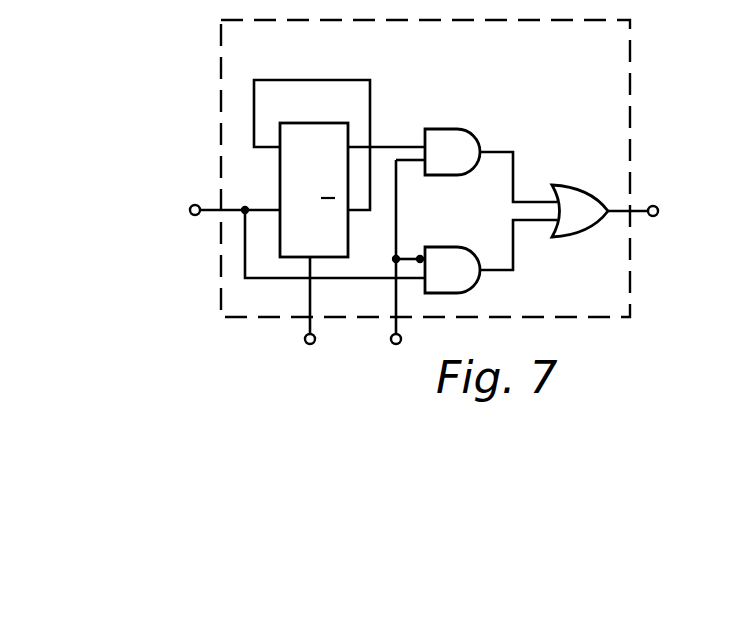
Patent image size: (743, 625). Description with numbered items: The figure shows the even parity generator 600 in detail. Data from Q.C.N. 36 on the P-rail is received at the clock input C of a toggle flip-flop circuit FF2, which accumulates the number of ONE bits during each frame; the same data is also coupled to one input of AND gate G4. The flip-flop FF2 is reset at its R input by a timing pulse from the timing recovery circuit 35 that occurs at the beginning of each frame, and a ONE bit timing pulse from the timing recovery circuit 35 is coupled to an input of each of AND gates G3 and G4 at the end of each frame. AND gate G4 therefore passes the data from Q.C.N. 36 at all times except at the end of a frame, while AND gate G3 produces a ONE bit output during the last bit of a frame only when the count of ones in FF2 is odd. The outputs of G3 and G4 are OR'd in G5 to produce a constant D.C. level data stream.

The even parity generator 600 is at (549, 73).
The Q.C.N. 36 is at (167, 278).
The toggle flip-flop circuit FF2 is at (312, 168).
The AND gate G3 is at (462, 164).
The AND gate G4 is at (462, 281).
The OR gate G5 is at (594, 221).
The timing recovery circuit 35 is at (416, 343).